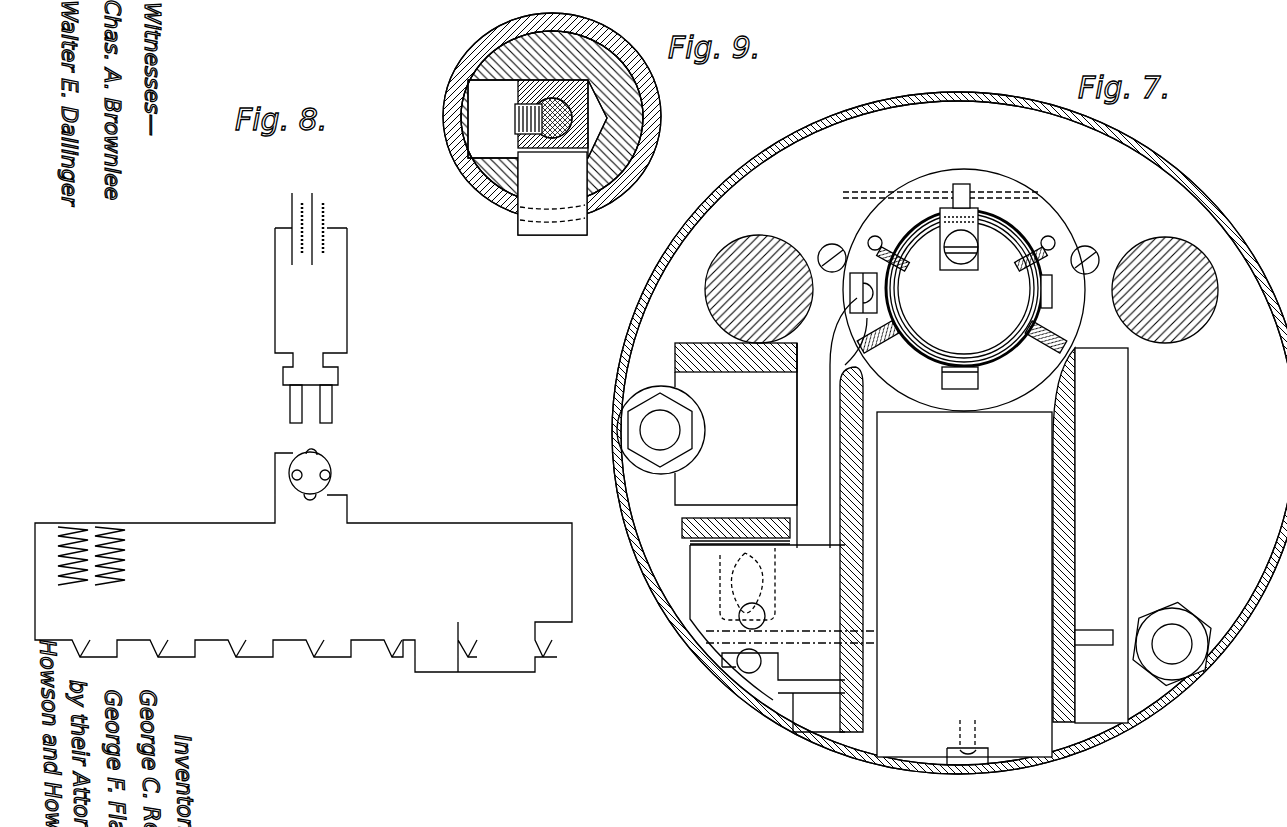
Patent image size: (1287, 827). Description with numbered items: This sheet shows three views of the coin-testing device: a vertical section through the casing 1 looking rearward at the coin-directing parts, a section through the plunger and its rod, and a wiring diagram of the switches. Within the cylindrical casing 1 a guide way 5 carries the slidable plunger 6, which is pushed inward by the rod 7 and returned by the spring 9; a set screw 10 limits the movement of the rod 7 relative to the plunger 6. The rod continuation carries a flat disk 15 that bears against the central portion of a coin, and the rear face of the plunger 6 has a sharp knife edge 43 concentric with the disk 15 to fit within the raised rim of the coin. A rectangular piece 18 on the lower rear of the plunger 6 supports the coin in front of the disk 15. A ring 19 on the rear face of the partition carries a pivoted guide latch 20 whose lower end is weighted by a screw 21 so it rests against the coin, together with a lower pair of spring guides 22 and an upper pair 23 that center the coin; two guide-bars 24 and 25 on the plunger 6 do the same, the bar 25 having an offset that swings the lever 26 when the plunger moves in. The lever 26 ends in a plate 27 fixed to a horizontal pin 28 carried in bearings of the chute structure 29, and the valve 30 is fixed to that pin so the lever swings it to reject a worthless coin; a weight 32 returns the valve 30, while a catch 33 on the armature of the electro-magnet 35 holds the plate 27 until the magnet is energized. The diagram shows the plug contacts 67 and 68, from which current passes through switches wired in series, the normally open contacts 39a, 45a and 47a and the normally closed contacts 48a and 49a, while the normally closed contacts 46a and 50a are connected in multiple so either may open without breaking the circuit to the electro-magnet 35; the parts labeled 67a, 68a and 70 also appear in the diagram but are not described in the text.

In FIG. 7, the cylindrical casing 1 is at (744, 700).
In FIG. 9, the guide way 5 is at (661, 115).
In FIG. 9, the plunger 6 is at (625, 160).
In FIG. 9, the rod 7 is at (553, 136).
In FIG. 9, the spring 9 is at (544, 237).
In FIG. 9, the set screw 10 is at (515, 122).
In FIG. 7, the flat disk 15 is at (964, 288).
In FIG. 7, the coin-supporting piece 18 is at (958, 390).
In FIG. 7, the ring 19 is at (1038, 212).
In FIG. 7, the guide latch 20 is at (944, 270).
In FIG. 7, the screw 21 is at (965, 262).
In FIG. 7, the lower spring guides 22 is at (882, 348).
In FIG. 7, the upper spring guides 23 is at (880, 238).
In FIG. 7, the guide-bar 24 is at (1050, 298).
In FIG. 7, the offset guide-bar 25 is at (858, 294).
In FIG. 7, the lever 26 is at (838, 478).
In FIG. 7, the plate 27 is at (870, 638).
In FIG. 7, the horizontal pin 28 is at (1092, 632).
In FIG. 7, the chute structure 29 is at (1065, 507).
In FIG. 7, the valve 30 is at (964, 588).
In FIG. 7, the weight 32 is at (778, 552).
In FIG. 7, the catch 33 is at (682, 530).
In FIG. 8, the electro-magnet 35 is at (108, 556).
In FIG. 8, the normally open switch contact 39a is at (85, 660).
In FIG. 7, the knife edge 43 is at (930, 225).
In FIG. 8, the normally open switch contact 45a is at (162, 660).
In FIG. 8, the normally closed switch contact 46a is at (468, 660).
In FIG. 8, the normally open switch contact 47a is at (239, 661).
In FIG. 8, the normally closed switch contact 48a is at (395, 663).
In FIG. 8, the normally closed switch contact 49a is at (317, 661).
In FIG. 8, the normally closed switch contact 50a is at (548, 658).
In FIG. 8, the plug contact 67 is at (331, 471).
In FIG. 8, the prong 67a is at (332, 408).
In FIG. 8, the plug contact 68 is at (289, 471).
In FIG. 8, the prong 68a is at (290, 408).
In FIG. 8, the cord 70 is at (323, 229).